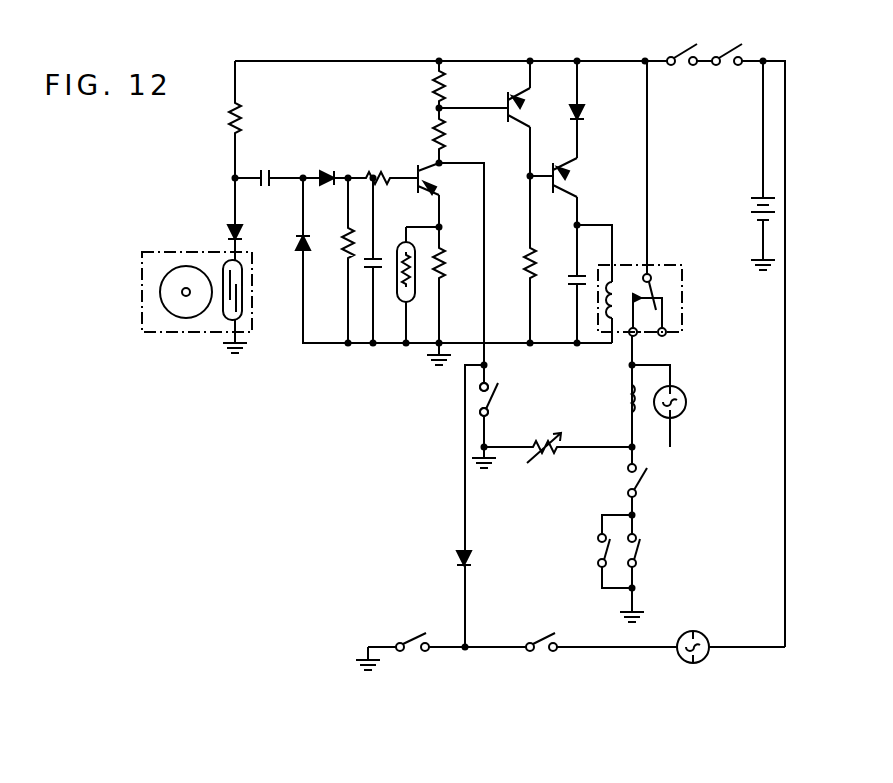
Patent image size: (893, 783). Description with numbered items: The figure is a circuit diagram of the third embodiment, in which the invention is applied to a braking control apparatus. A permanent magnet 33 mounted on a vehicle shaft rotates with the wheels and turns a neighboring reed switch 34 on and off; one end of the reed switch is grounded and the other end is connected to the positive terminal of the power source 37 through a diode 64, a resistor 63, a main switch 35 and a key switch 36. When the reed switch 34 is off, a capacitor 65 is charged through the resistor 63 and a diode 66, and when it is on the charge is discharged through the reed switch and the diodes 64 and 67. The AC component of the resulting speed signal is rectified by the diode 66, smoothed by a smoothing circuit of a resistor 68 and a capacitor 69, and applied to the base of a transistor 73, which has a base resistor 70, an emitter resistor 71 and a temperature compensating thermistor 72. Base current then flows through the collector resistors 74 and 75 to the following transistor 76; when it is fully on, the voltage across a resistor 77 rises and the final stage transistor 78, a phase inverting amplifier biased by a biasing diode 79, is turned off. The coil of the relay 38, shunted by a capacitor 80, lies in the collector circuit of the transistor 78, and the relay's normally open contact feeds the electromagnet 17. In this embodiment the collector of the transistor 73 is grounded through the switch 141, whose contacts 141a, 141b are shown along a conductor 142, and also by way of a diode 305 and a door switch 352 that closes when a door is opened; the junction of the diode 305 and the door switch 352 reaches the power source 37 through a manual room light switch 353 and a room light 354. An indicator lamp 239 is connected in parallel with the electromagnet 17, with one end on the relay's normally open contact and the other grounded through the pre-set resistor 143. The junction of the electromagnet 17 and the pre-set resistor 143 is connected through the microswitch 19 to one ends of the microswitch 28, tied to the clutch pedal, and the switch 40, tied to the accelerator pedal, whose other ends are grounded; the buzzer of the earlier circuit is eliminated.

The resistor 63 is at (243, 118).
The capacitor 65 is at (267, 161).
The diode 66 is at (330, 165).
The base resistor 70 is at (385, 171).
The transistor 73 is at (444, 184).
The collector resistor 74 is at (433, 86).
The collector resistor 75 is at (433, 126).
The transistor 76 is at (536, 109).
The biasing diode 79 is at (586, 108).
The final stage transistor 78 is at (583, 177).
The diode 64 is at (243, 236).
The permanent magnet 33 is at (186, 260).
The reed switch 34 is at (242, 300).
The diode 67 is at (296, 250).
The resistor 68 is at (342, 240).
The capacitor 69 is at (368, 267).
The temperature compensating thermistor 72 is at (400, 244).
The emitter resistor 71 is at (446, 264).
The resistor 77 is at (526, 270).
The capacitor 80 is at (566, 283).
The relay 38 is at (672, 265).
The main switch 35 is at (685, 41).
The key switch 36 is at (734, 41).
The power source 37 is at (749, 210).
The conductor 142 is at (486, 330).
The switch 141 is at (496, 397).
The switch contact 141a is at (478, 387).
The switch contact 141b is at (480, 404).
The pre-set resistor 143 is at (549, 460).
The electromagnet 17 is at (624, 404).
The indicator lamp 239 is at (688, 402).
The microswitch 19 is at (644, 480).
The microswitch 28 is at (596, 550).
The switch 40 is at (640, 549).
The diode 305 is at (454, 560).
The door switch 352 is at (415, 636).
The manual room light switch 353 is at (543, 636).
The room light 354 is at (691, 632).